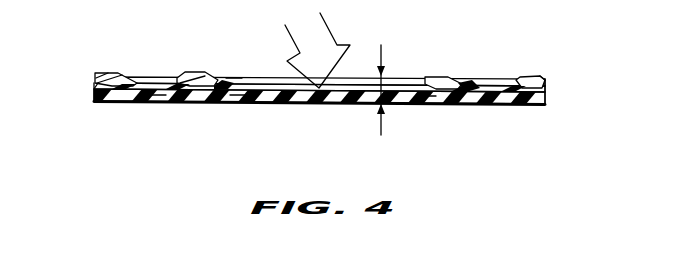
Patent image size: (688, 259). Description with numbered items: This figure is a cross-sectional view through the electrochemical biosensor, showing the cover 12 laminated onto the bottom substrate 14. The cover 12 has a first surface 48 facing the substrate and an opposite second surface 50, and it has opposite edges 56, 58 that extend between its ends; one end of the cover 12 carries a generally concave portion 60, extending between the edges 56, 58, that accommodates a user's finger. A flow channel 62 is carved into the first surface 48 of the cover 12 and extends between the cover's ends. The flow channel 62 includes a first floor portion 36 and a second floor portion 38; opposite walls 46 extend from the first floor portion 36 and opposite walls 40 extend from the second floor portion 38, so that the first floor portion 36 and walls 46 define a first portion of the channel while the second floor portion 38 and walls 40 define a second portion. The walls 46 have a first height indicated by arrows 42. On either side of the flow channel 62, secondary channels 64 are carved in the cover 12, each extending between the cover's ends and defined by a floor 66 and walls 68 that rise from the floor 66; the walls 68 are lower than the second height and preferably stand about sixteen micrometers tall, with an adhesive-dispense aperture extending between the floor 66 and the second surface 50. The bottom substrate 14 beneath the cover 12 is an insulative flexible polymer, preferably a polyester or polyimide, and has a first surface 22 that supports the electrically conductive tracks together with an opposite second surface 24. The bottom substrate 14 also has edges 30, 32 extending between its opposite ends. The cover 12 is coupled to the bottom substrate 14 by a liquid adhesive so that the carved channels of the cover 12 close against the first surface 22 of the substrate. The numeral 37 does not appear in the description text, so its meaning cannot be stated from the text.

The cover 12 is at (549, 56).
The bottom substrate 14 is at (549, 117).
The first surface 22 is at (259, 86).
The second surface 24 is at (156, 104).
The edge 30 is at (93, 92).
The edge 32 is at (545, 101).
The first floor portion 36 is at (140, 78).
The raised tab 37 is at (108, 72).
The second floor portion 38 is at (187, 72).
The walls 40 is at (237, 92).
The arrows indicating first height 42 is at (331, 27).
The walls 46 is at (383, 48).
The first surface 48 is at (426, 96).
The second surface 50 is at (443, 75).
The edge 56 is at (97, 73).
The edge 58 is at (547, 82).
The concave portion 60 is at (233, 68).
The flow channel 62 is at (86, 83).
The secondary channel 64 is at (557, 91).
The floor 66 is at (184, 90).
The walls 68 is at (122, 92).